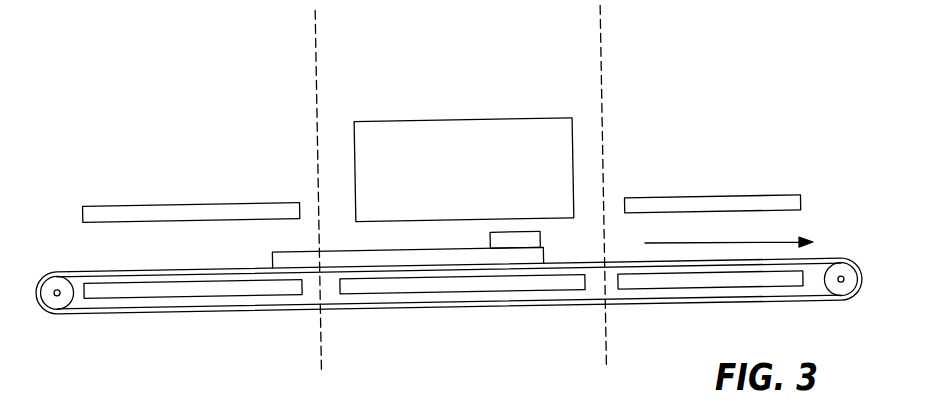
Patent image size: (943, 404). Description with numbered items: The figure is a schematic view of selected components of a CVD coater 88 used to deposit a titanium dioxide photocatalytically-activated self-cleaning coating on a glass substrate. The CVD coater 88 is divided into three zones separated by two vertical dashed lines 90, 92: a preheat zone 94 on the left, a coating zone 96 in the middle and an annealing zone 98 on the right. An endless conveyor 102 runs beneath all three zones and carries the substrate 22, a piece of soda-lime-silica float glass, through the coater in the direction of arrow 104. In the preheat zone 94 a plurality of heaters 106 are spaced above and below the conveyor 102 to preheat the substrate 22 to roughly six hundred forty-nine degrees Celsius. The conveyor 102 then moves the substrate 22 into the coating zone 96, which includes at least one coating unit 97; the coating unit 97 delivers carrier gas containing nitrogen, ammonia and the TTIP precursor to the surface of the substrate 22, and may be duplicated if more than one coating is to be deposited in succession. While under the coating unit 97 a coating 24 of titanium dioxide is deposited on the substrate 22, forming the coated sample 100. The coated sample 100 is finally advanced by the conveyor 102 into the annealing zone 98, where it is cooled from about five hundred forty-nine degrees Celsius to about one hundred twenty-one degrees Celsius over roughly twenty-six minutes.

The substrate 22 is at (452, 258).
The coating 24 is at (505, 240).
The CVD coater 88 is at (724, 61).
The vertical dashed line 90 is at (315, 27).
The vertical dashed line 92 is at (601, 22).
The preheat zone 94 is at (135, 91).
The coating zone 96 is at (460, 81).
The coating unit 97 is at (490, 118).
The annealing zone 98 is at (781, 115).
The coated sample 100 is at (435, 292).
The endless conveyor 102 is at (218, 313).
The arrow 104 is at (788, 240).
The heaters 106 is at (207, 201).